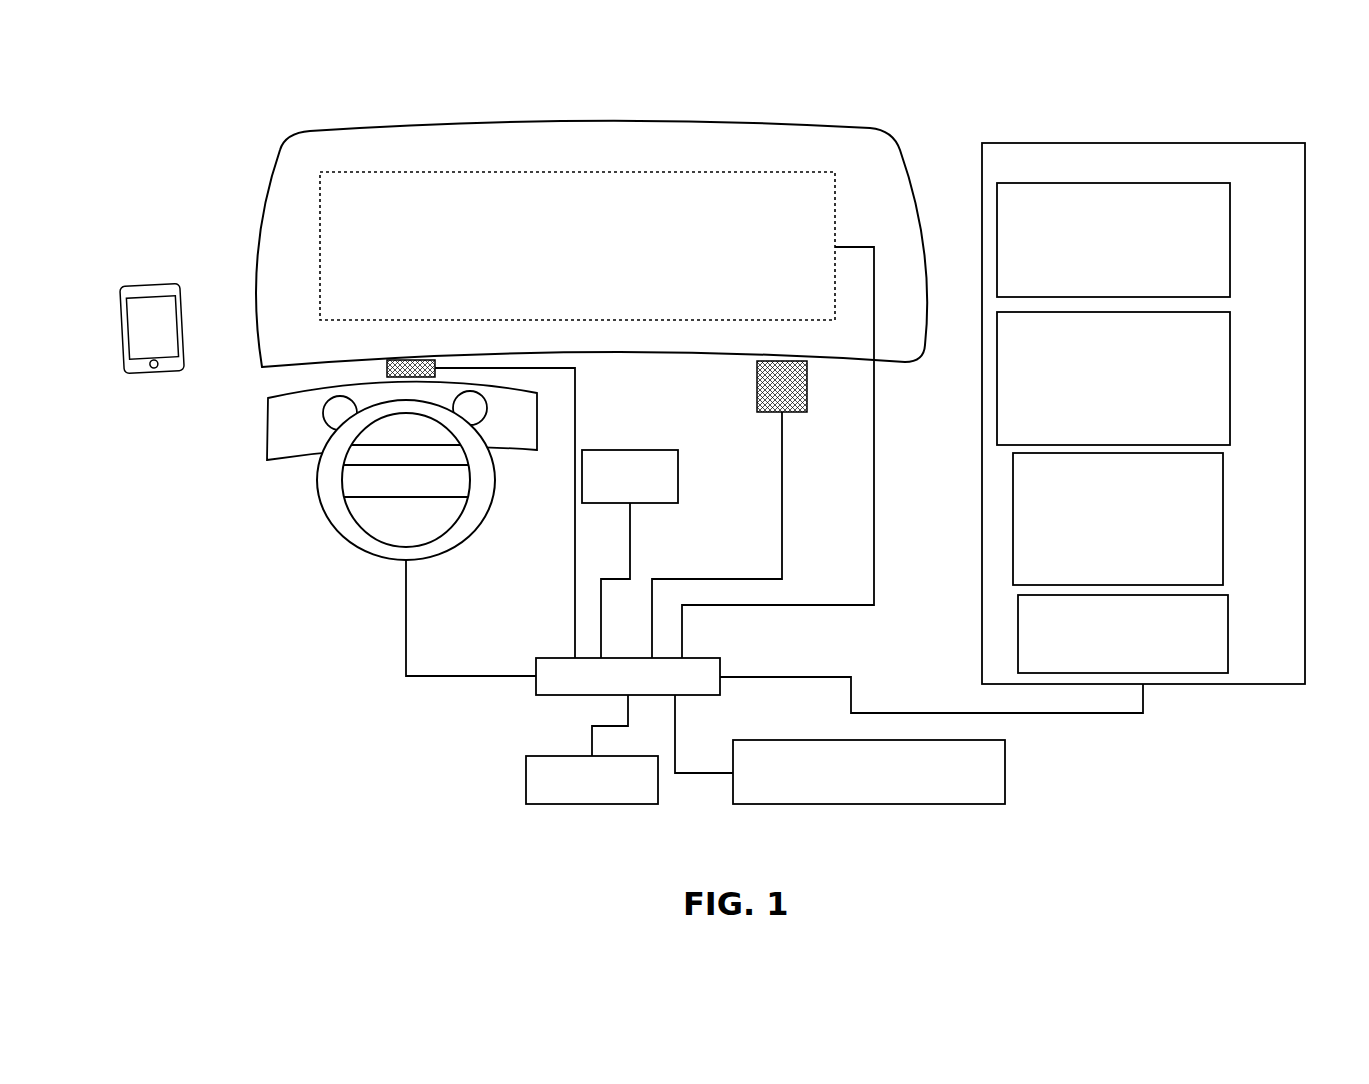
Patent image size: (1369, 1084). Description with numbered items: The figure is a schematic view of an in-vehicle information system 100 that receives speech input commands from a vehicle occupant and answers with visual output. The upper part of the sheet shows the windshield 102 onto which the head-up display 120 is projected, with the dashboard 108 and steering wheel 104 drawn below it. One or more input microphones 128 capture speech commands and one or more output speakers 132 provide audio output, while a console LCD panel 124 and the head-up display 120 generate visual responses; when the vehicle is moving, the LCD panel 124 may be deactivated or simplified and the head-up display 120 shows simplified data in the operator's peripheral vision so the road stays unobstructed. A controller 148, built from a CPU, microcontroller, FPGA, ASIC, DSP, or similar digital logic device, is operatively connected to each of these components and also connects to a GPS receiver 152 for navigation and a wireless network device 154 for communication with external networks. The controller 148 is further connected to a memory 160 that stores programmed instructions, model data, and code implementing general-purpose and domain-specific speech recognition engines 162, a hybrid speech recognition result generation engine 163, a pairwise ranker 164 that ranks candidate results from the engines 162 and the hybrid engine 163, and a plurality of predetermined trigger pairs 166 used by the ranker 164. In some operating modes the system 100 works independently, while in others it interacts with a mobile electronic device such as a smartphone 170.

The in-vehicle information system 100 is at (170, 209).
The windshield 102 is at (265, 213).
The steering wheel 104 is at (336, 528).
The dashboard 108 is at (267, 440).
The head-up display (HUD) 120 is at (613, 172).
The console LCD panel 124 is at (657, 450).
The input microphone 128 is at (387, 367).
The output speaker 132 is at (787, 412).
The controller 148 is at (697, 658).
The global positioning system (GPS) receiver 152 is at (526, 782).
The wireless network device 154 is at (793, 804).
The memory 160 is at (1233, 143).
The general-purpose and domain-specific speech recognition engines 162 is at (1232, 245).
The hybrid speech recognition result generation engine 163 is at (1232, 378).
The pairwise ranker 164 is at (1224, 535).
The predetermined trigger pairs 166 is at (1230, 630).
The smartphone 170 is at (122, 330).